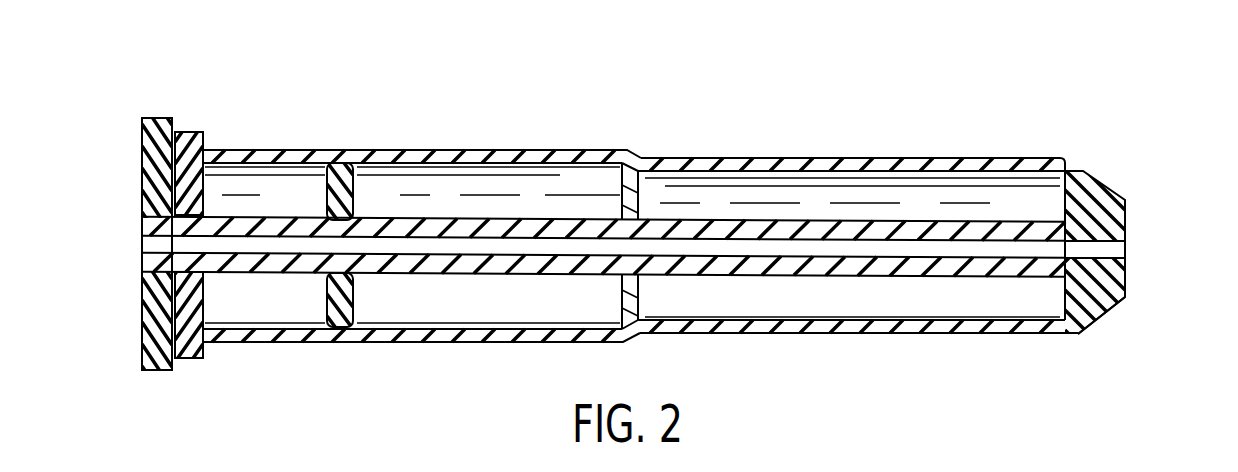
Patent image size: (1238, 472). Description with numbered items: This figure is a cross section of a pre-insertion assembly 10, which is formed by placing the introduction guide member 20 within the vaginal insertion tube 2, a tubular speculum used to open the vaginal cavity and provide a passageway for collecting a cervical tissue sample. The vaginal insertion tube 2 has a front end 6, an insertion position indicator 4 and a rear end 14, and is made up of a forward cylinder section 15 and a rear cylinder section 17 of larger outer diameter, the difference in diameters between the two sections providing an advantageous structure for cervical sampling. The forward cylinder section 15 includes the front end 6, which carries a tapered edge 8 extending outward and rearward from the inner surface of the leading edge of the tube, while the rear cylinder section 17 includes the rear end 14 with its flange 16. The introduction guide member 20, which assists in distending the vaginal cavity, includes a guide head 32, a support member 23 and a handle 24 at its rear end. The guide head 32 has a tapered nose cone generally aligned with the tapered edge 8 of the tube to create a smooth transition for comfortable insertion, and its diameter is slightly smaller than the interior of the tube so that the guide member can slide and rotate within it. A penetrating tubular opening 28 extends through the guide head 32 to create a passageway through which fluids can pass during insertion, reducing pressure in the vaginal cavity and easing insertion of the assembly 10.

The vaginal insertion tube 2 is at (533, 143).
The insertion position indicator 4 is at (628, 340).
The front end 6 is at (1083, 323).
The tapered edge 8 is at (1072, 170).
The pre-insertion assembly 10 is at (737, 107).
The rear end 14 is at (178, 198).
The forward cylinder section 15 is at (918, 158).
The flange 16 is at (188, 358).
The rear cylinder section 17 is at (322, 150).
The introduction guide member 20 is at (782, 214).
The support member 23 is at (353, 298).
The handle 24 is at (155, 118).
The penetrating tubular opening 28 is at (1125, 250).
The guide head 32 is at (1108, 303).